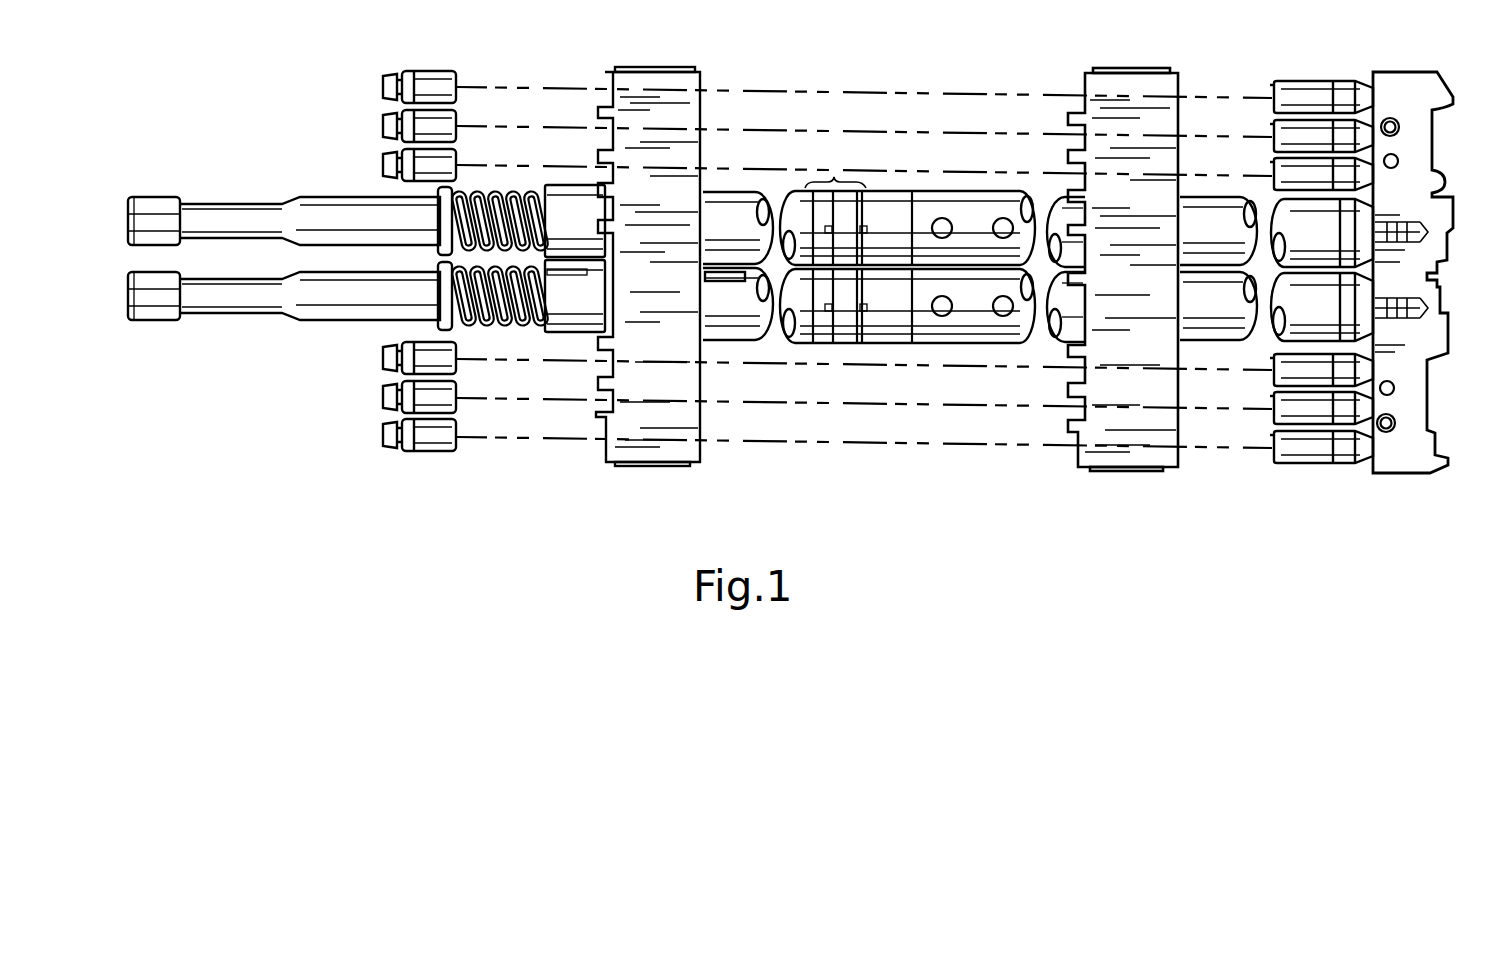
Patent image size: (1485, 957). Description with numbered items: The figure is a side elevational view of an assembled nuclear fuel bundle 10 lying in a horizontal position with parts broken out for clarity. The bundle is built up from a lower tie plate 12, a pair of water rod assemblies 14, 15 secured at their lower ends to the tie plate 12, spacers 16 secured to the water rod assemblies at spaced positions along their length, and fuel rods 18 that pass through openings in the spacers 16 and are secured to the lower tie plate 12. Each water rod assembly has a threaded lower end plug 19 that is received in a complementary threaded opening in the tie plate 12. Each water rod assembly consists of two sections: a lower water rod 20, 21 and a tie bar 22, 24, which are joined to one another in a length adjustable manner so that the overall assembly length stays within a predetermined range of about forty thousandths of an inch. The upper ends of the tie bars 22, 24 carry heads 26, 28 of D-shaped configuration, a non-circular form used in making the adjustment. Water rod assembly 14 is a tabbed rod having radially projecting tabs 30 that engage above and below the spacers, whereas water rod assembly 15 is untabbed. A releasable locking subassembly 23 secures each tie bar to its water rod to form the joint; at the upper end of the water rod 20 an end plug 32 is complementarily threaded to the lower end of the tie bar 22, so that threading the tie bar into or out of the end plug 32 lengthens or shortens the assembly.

The nuclear fuel bundle 10 is at (960, 530).
The lower tie plate 12 is at (1395, 469).
The water rod assembly 14 is at (870, 343).
The water rod assembly 15 is at (935, 188).
The spacers 16 is at (1128, 474).
The fuel rods 18 is at (1298, 132).
The threaded lower end plugs 19 is at (1425, 245).
The lower water rod 20 is at (965, 304).
The lower water rod 21 is at (983, 208).
The tie bar 22 is at (352, 309).
The releasable locking subassembly 23 is at (832, 178).
The tie bar 24 is at (330, 216).
The head 26 is at (185, 320).
The head 28 is at (155, 204).
The radially projecting tabs 30 is at (728, 283).
The end plug 32 is at (898, 320).